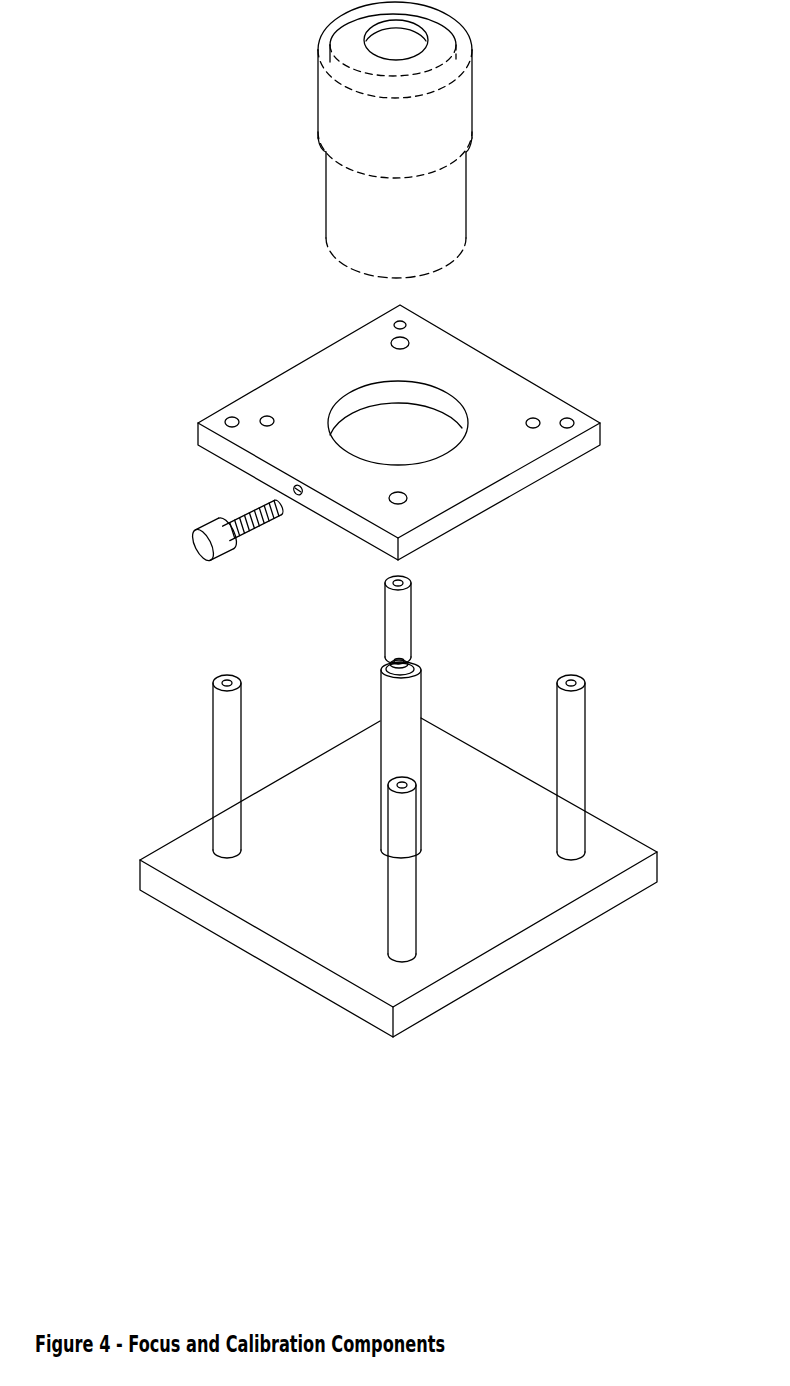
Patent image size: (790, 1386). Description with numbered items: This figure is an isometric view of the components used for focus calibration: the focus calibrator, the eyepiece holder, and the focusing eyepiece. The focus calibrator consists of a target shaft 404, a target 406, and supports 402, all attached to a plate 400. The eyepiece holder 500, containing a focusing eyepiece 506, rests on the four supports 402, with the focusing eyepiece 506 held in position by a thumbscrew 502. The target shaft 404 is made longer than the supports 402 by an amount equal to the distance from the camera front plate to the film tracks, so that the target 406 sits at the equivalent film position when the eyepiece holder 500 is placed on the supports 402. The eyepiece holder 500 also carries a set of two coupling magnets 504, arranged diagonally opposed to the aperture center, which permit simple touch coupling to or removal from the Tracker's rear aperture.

The plate 400 is at (398, 877).
The supports 402 is at (567, 742).
The target shaft 404 is at (400, 735).
The target 406 is at (417, 663).
The eyepiece holder 500 is at (497, 387).
The thumbscrew 502 is at (193, 534).
The coupling magnets 504 is at (409, 342).
The focusing eyepiece 506 is at (395, 140).